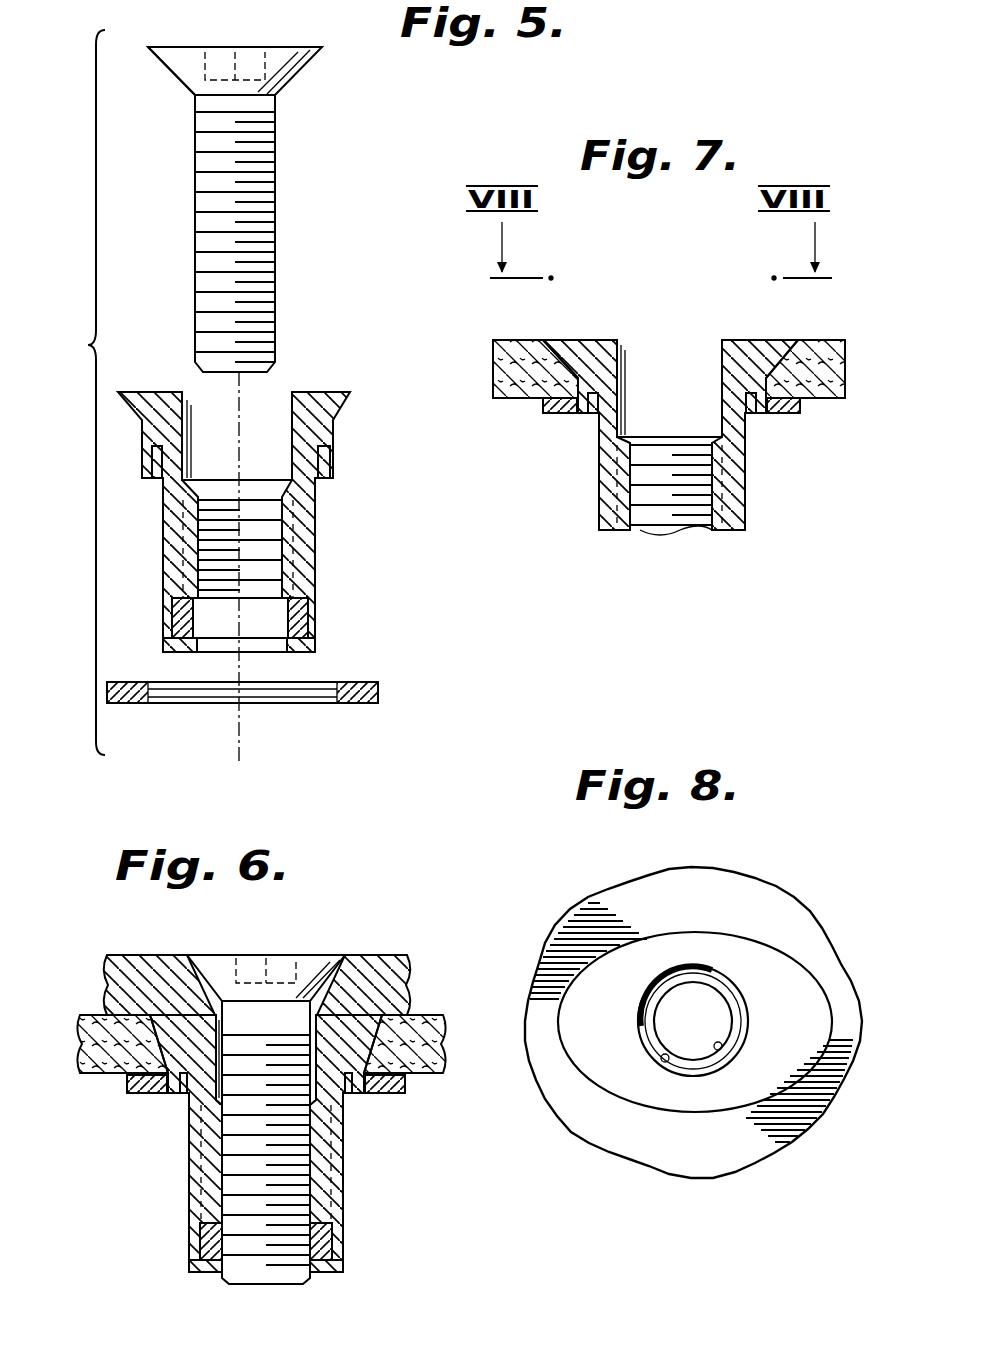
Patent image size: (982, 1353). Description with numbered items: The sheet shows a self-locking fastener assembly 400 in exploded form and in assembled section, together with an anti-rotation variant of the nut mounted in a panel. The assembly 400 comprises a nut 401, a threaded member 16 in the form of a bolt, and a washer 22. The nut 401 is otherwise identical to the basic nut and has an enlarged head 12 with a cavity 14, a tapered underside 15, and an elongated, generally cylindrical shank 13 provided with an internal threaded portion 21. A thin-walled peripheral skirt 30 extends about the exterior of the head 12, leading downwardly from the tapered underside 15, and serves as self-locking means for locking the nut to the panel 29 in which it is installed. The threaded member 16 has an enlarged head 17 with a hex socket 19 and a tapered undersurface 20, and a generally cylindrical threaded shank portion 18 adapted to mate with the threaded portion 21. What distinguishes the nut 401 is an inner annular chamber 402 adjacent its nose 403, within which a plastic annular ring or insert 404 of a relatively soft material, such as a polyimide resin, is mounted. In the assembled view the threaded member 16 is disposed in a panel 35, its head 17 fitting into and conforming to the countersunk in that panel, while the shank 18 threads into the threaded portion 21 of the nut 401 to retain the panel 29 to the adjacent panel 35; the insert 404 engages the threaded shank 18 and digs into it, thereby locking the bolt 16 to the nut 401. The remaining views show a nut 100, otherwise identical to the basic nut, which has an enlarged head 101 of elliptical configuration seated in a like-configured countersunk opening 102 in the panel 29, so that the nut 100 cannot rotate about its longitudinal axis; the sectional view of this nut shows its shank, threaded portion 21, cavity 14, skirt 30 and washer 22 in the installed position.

In FIG. 5, the enlarged head 12 is at (140, 403).
In FIG. 5, the elongated shank 13 is at (172, 540).
In FIG. 7, the elongated shank 13 is at (747, 508).
In FIG. 5, the cavity 14 is at (197, 398).
In FIG. 7, the cavity 14 is at (668, 338).
In FIG. 6, the cavity 14 is at (222, 1001).
In FIG. 8, the cavity 14 is at (666, 1062).
In FIG. 5, the underside of head 15 is at (350, 396).
In FIG. 5, the threaded member 16 is at (239, 186).
In FIG. 6, the threaded member 16 is at (301, 1087).
In FIG. 5, the enlarged head 17 is at (285, 68).
In FIG. 6, the enlarged head 17 is at (305, 954).
In FIG. 5, the threaded shank portion 18 is at (218, 243).
In FIG. 6, the threaded shank portion 18 is at (293, 1167).
In FIG. 5, the hex socket 19 is at (215, 48).
In FIG. 5, the tapered undersurface 20 is at (180, 80).
In FIG. 5, the internal threaded portion 21 is at (272, 520).
In FIG. 7, the internal threaded portion 21 is at (683, 512).
In FIG. 6, the internal threaded portion 21 is at (227, 1170).
In FIG. 8, the internal threaded portion 21 is at (720, 1050).
In FIG. 5, the washer 22 is at (278, 708).
In FIG. 7, the washer 22 is at (790, 415).
In FIG. 6, the washer 22 is at (132, 1095).
In FIG. 7, the panel 29 is at (512, 338).
In FIG. 6, the panel 29 is at (417, 1013).
In FIG. 8, the panel 29 is at (620, 905).
In FIG. 5, the thin-walled peripheral skirt 30 is at (332, 452).
In FIG. 7, the thin-walled peripheral skirt 30 is at (587, 422).
In FIG. 6, the thin-walled peripheral skirt 30 is at (175, 1103).
In FIG. 6, the panel 35 is at (140, 963).
In FIG. 7, the nut 100 is at (645, 424).
In FIG. 7, the enlarged head 101 is at (573, 338).
In FIG. 8, the enlarged head 101 is at (742, 955).
In FIG. 7, the countersunk opening 102 is at (760, 338).
In FIG. 5, the assembly 400 is at (65, 392).
In FIG. 5, the nut 401 is at (282, 504).
In FIG. 6, the nut 401 is at (268, 1095).
In FIG. 5, the inner annular chamber 402 is at (176, 610).
In FIG. 6, the inner annular chamber 402 is at (203, 1247).
In FIG. 5, the nose 403 is at (313, 650).
In FIG. 6, the nose 403 is at (333, 1277).
In FIG. 5, the plastic annular ring or insert 404 is at (300, 612).
In FIG. 6, the plastic annular ring or insert 404 is at (328, 1233).